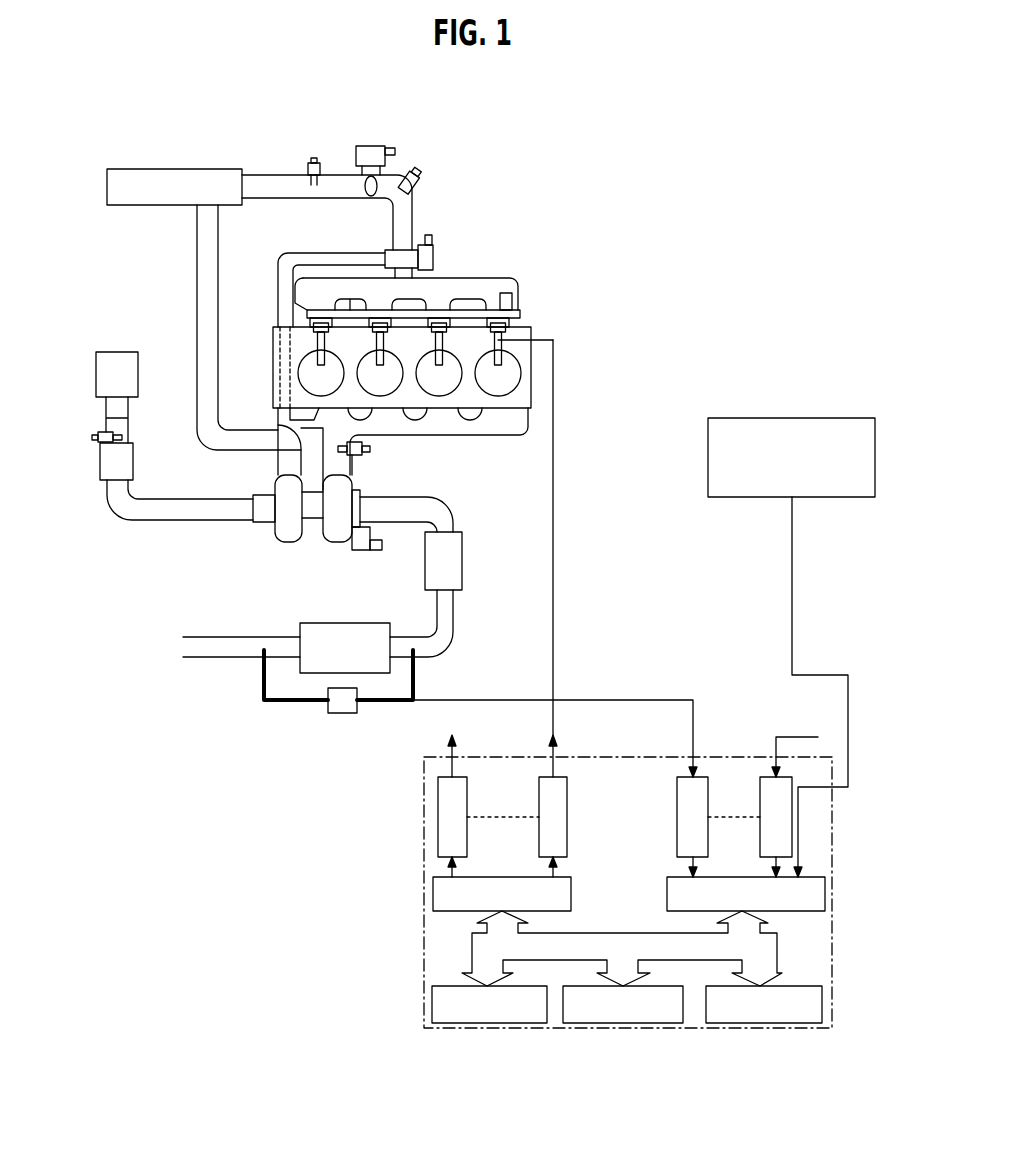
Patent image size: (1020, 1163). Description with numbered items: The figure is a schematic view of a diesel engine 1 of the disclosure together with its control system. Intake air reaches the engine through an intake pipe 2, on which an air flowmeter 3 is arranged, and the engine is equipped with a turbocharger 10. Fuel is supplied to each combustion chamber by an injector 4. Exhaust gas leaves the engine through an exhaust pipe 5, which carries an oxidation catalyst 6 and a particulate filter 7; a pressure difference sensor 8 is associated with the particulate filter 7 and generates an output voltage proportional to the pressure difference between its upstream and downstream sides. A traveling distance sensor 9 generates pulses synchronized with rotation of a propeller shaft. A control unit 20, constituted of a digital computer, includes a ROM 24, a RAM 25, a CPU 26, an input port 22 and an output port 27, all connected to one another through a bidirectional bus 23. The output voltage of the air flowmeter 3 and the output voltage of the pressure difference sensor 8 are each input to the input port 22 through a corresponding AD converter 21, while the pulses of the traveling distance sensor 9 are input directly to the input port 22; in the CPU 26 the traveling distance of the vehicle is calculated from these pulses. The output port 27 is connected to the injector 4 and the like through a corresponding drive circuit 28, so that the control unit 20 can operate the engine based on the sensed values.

The diesel engine 1 is at (532, 227).
The intake pipe 2 is at (172, 512).
The air flowmeter 3 is at (100, 433).
The injector 4 is at (320, 340).
The exhaust pipe 5 is at (440, 505).
The oxidation catalyst 6 is at (452, 562).
The particulate filter 7 is at (322, 628).
The pressure difference sensor 8 is at (343, 705).
The traveling distance sensor 9 is at (735, 418).
The turbocharger 10 is at (275, 532).
The control unit 20 is at (608, 757).
The AD converter 21 is at (760, 787).
The input port 22 is at (668, 878).
The bidirectional bus 23 is at (778, 947).
The ROM 24 is at (488, 1023).
The RAM 25 is at (623, 1023).
The CPU 26 is at (768, 1023).
The output port 27 is at (433, 888).
The drive circuit 28 is at (539, 787).